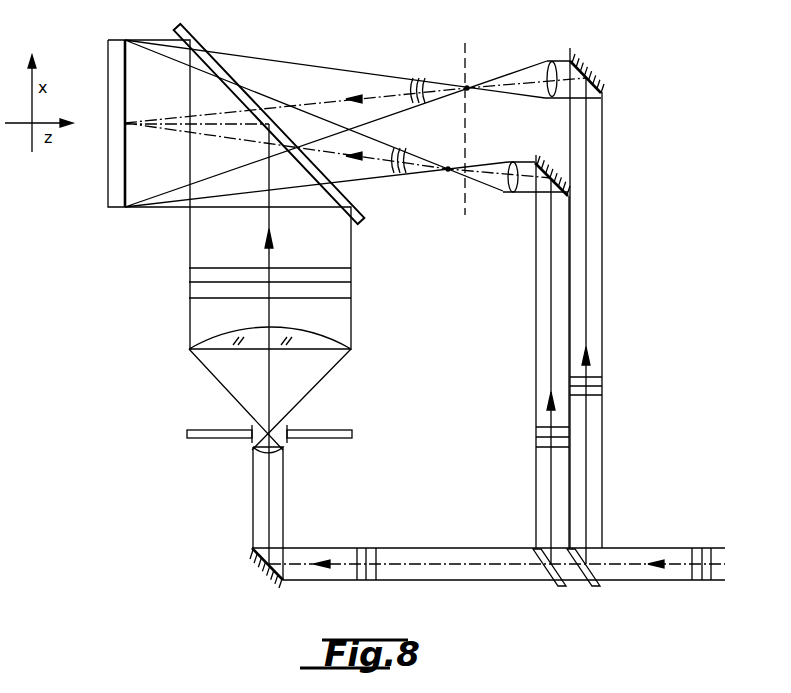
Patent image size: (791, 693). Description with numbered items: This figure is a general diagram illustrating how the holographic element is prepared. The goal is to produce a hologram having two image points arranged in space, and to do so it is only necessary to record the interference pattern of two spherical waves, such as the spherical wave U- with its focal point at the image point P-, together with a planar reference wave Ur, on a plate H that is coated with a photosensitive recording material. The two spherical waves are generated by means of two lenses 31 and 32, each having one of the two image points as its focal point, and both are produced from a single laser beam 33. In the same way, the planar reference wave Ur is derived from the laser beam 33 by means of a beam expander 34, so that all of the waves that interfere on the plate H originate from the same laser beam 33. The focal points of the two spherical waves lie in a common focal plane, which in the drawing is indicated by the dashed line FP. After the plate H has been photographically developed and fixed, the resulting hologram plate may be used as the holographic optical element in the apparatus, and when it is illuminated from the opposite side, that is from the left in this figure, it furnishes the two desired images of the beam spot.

The lens 31 is at (513, 195).
The lens 32 is at (553, 59).
The laser beam 33 is at (666, 548).
The beam expander 34 is at (178, 383).
The plate H is at (116, 202).
The planar reference wave Ur is at (204, 266).
The focal plane FP is at (465, 186).
The image point P- is at (450, 171).
The spherical wave U- is at (394, 174).